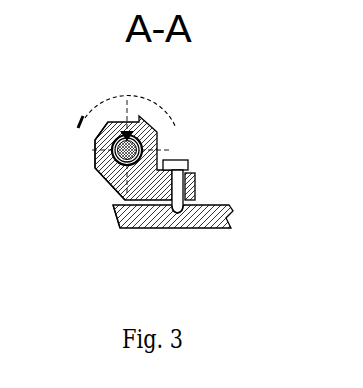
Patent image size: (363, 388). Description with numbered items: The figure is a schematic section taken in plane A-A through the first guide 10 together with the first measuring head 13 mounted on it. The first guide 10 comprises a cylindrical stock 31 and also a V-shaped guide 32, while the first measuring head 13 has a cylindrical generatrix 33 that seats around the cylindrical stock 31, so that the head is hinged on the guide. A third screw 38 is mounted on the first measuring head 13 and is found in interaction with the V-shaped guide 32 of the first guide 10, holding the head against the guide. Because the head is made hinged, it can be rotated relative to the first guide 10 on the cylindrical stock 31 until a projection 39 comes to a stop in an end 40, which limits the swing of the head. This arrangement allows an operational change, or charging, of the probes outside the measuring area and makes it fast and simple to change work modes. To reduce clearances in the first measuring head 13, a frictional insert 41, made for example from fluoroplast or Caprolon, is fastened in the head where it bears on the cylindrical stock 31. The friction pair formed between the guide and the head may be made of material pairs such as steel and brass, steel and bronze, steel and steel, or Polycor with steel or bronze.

The first guide 10 is at (207, 229).
The first measuring head 13 is at (112, 177).
The cylindrical stock 31 is at (112, 147).
The V-shaped guide 32 is at (173, 211).
The cylindrical generatrix 33 is at (99, 160).
The third screw 38 is at (176, 174).
The projection 39 is at (132, 107).
The end 40 is at (112, 219).
The frictional insert 41 is at (121, 128).